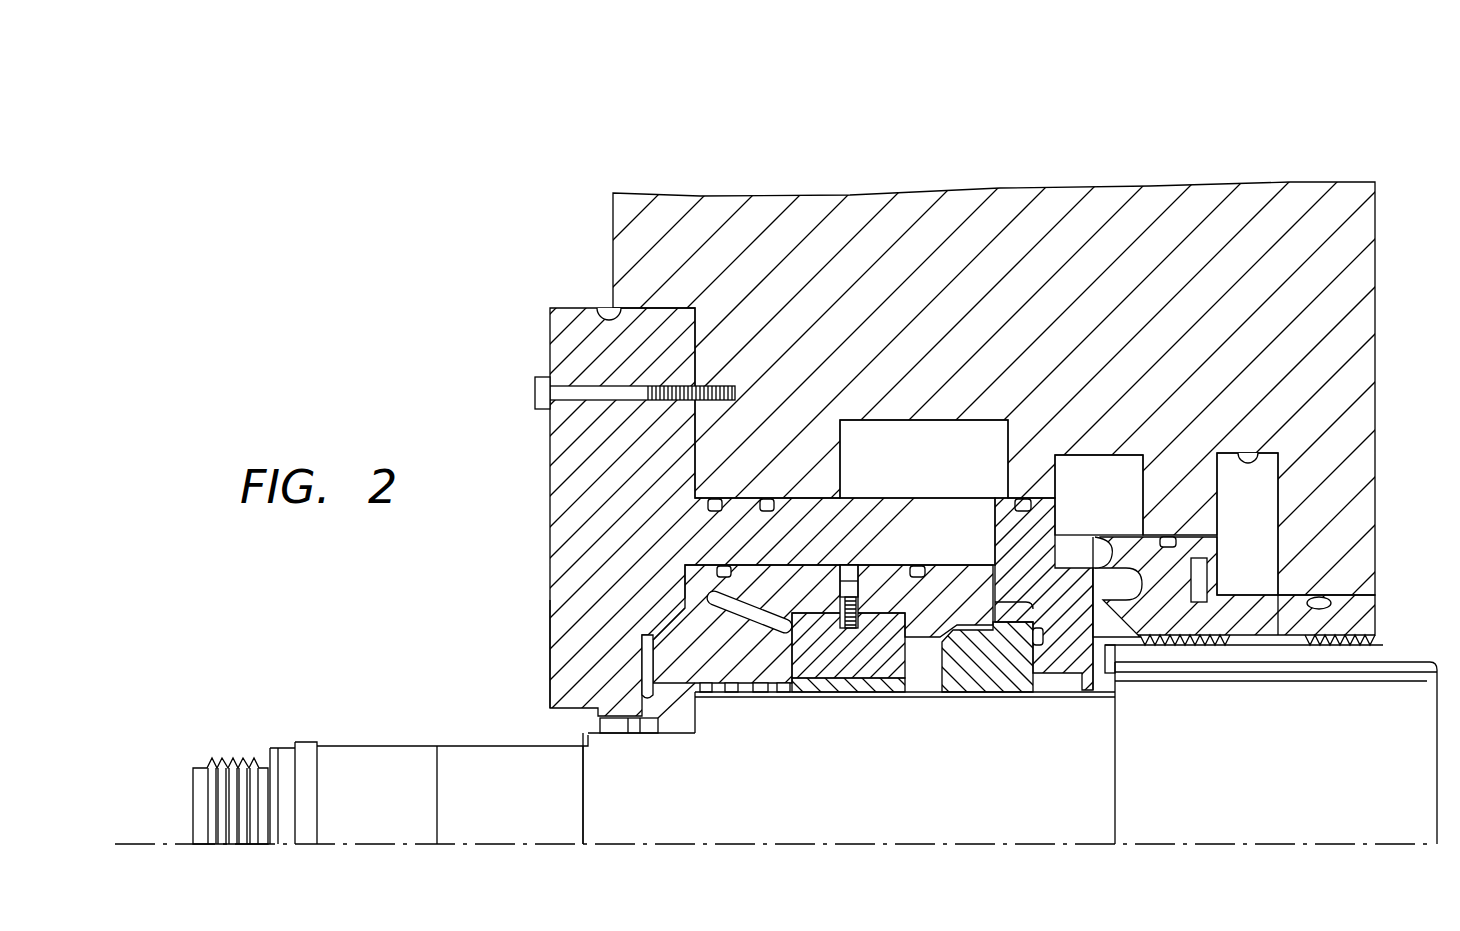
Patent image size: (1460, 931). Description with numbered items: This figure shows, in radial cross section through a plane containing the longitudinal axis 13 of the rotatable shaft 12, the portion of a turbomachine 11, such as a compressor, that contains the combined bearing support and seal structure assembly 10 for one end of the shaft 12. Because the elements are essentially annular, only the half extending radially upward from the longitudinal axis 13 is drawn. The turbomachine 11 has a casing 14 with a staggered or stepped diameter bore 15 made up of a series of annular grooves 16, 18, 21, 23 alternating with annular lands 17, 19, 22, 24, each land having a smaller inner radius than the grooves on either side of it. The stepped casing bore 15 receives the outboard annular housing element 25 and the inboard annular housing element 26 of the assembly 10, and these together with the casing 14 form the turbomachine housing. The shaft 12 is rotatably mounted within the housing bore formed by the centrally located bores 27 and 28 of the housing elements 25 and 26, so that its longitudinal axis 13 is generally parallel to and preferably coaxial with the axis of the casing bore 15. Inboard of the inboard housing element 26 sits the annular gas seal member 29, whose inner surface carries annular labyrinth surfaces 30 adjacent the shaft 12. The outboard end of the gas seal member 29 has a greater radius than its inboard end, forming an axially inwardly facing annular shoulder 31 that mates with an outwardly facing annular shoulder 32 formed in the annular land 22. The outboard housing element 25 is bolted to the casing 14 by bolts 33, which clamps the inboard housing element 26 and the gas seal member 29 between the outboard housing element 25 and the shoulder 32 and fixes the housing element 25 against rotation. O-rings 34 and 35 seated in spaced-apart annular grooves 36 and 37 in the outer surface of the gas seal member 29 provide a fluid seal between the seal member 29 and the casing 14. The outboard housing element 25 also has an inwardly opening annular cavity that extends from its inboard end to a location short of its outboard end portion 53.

The combined bearing support and seal structure assembly 10 is at (508, 256).
The turbomachine 11 is at (1222, 152).
The rotatable shaft 12 is at (522, 812).
The longitudinal axis 13 is at (163, 844).
The casing 14 is at (748, 205).
The stepped diameter bore 15 is at (792, 494).
The annular groove 16 is at (608, 306).
The annular land 17 is at (742, 498).
The annular groove 18 is at (882, 425).
The annular land 19 is at (985, 498).
The annular groove 21 is at (1088, 457).
The annular land 22 is at (1138, 546).
The annular groove 23 is at (1250, 448).
The annular land 24 is at (1385, 603).
The outboard annular housing element 25 is at (538, 509).
The inboard annular housing element 26 is at (1060, 673).
The bore 27 is at (630, 737).
The bore 28 is at (1045, 686).
The annular gas seal member 29 is at (1252, 630).
The annular labyrinth surfaces 30 is at (1153, 648).
The annular shoulder 31 is at (1212, 560).
The annular shoulder 32 is at (1200, 638).
The bolts 33 is at (533, 392).
The O-ring 34 is at (1168, 533).
The O-ring 35 is at (1308, 646).
The annular groove 36 is at (1195, 537).
The annular groove 37 is at (1305, 595).
The outboard end portion 53 is at (548, 647).